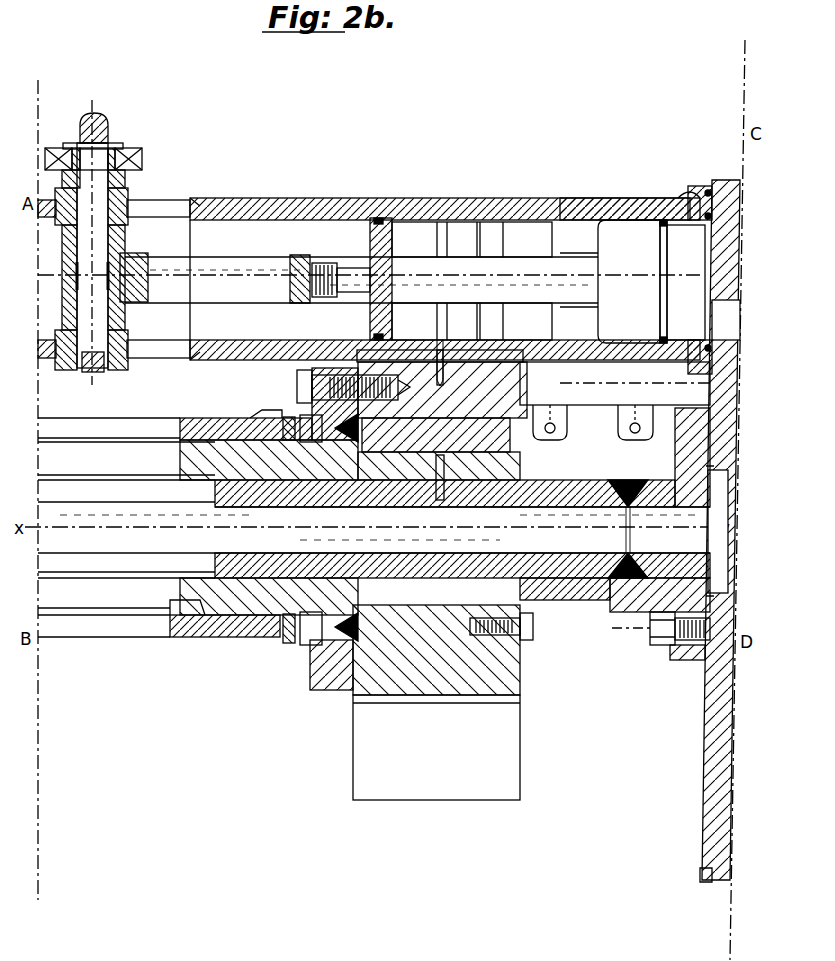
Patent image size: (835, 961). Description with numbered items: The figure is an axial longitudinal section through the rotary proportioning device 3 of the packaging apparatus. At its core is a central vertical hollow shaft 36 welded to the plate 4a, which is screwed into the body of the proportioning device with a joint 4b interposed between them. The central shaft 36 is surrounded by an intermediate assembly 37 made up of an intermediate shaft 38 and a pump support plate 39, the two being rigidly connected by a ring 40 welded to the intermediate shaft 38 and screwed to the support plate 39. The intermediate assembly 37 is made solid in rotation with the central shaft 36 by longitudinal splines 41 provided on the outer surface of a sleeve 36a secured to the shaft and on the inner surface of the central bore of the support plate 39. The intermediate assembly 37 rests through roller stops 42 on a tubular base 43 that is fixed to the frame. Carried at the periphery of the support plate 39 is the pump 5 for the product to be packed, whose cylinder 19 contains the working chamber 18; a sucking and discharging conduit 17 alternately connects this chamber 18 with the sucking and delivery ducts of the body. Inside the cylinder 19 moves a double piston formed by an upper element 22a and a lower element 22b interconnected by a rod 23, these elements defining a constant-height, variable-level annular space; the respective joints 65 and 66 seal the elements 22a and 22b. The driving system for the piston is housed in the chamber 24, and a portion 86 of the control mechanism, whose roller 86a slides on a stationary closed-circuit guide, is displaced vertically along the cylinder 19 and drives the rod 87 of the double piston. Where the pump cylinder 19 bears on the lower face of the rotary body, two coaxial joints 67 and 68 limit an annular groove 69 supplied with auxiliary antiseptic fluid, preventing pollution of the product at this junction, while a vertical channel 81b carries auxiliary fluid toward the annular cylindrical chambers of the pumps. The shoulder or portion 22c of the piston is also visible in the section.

The rotary proportioning device 3 is at (568, 582).
The plate 4a is at (677, 575).
The joint 4b is at (676, 458).
The pump 5 is at (290, 198).
The sucking and discharging conduit 17 is at (729, 320).
The chamber 18 is at (688, 282).
The cylinder 19 is at (566, 205).
The upper element 22a is at (610, 281).
The lower element 22b is at (385, 232).
The shaft groove portion 22c is at (466, 275).
The rod 23 is at (420, 240).
The chamber 24 is at (240, 238).
The central vertical hollow shaft 36 is at (540, 580).
The sleeve 36a is at (512, 470).
The intermediate assembly 37 is at (535, 462).
The intermediate shaft 38 is at (182, 445).
The pump support plate 39 is at (505, 402).
The ring 40 is at (296, 398).
The splines 41 is at (372, 705).
The roller stops 42 is at (292, 645).
The tubular base 43 is at (182, 638).
The joint 65 is at (663, 218).
The joint 66 is at (381, 216).
The joint 67 is at (700, 186).
The joint 68 is at (710, 188).
The annular groove 69 is at (712, 186).
The vertical channel 81b is at (615, 383).
The portion of the control mechanism 86 is at (135, 180).
The roller 86a is at (50, 148).
The rod 87 is at (302, 262).